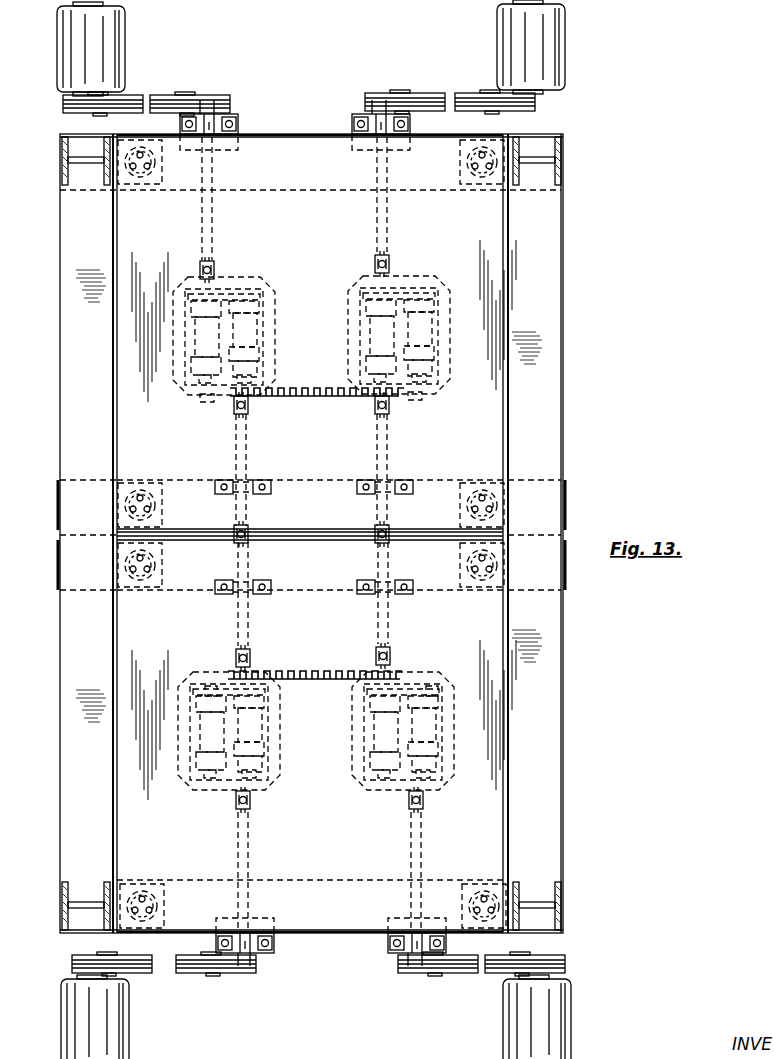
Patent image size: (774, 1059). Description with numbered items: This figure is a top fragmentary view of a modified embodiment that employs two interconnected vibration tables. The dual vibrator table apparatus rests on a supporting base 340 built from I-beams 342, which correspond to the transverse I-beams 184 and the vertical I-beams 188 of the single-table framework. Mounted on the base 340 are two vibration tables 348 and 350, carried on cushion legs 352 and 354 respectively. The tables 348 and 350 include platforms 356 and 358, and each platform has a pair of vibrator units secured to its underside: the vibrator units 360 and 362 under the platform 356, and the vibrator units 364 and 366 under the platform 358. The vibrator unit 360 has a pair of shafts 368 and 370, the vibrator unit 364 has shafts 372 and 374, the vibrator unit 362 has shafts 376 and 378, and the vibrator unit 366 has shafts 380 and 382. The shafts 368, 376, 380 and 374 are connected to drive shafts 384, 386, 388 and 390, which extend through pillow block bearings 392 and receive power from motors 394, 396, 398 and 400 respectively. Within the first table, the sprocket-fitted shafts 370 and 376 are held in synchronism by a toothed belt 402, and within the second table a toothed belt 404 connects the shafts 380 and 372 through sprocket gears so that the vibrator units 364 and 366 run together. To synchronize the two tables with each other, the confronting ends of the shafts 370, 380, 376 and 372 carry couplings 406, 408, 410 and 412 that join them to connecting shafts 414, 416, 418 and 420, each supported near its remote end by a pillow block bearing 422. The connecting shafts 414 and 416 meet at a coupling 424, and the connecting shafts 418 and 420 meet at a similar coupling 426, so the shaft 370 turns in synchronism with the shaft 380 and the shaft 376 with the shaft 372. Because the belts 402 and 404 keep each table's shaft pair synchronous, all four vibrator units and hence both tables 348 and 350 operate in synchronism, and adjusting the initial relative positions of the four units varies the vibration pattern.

The transversely extending I-beam 184 is at (60, 400).
The vertical I-beam 188 is at (80, 160).
The supporting base 340 is at (570, 225).
The I-beam 342 is at (304, 190).
The vibration table 348 is at (488, 285).
The vibration table 350 is at (490, 722).
The cushion leg 352 is at (140, 186).
The cushion leg 354 is at (158, 570).
The platform 356 is at (320, 148).
The platform 358 is at (300, 918).
The vibrator unit 360 is at (275, 296).
The vibrator unit 362 is at (350, 332).
The vibrator unit 364 is at (354, 712).
The vibrator unit 366 is at (280, 732).
The shaft 368 is at (214, 275).
The shaft 370 is at (212, 398).
The shaft 372 is at (380, 786).
The shaft 374 is at (432, 690).
The shaft 376 is at (388, 268).
The shaft 378 is at (420, 394).
The shaft 380 is at (232, 798).
The shaft 382 is at (200, 690).
The drive shaft 384 is at (214, 212).
The drive shaft 386 is at (390, 210).
The drive shaft 388 is at (234, 862).
The drive shaft 390 is at (410, 855).
The pillow block bearing 392 is at (236, 120).
The motor 394 is at (122, 48).
The motor 396 is at (552, 40).
The motor 398 is at (124, 1012).
The motor 400 is at (512, 1002).
The belt 402 is at (310, 384).
The toothed belt 404 is at (300, 670).
The coupling 406 is at (248, 408).
The coupling 408 is at (250, 654).
The coupling 410 is at (372, 406).
The coupling 412 is at (390, 652).
The connecting shaft 414 is at (248, 520).
The connecting shaft 416 is at (232, 600).
The connecting shaft 418 is at (388, 444).
The connecting shaft 420 is at (392, 612).
The pillow block bearing 422 is at (232, 482).
The coupling 424 is at (250, 537).
The coupling 426 is at (390, 522).